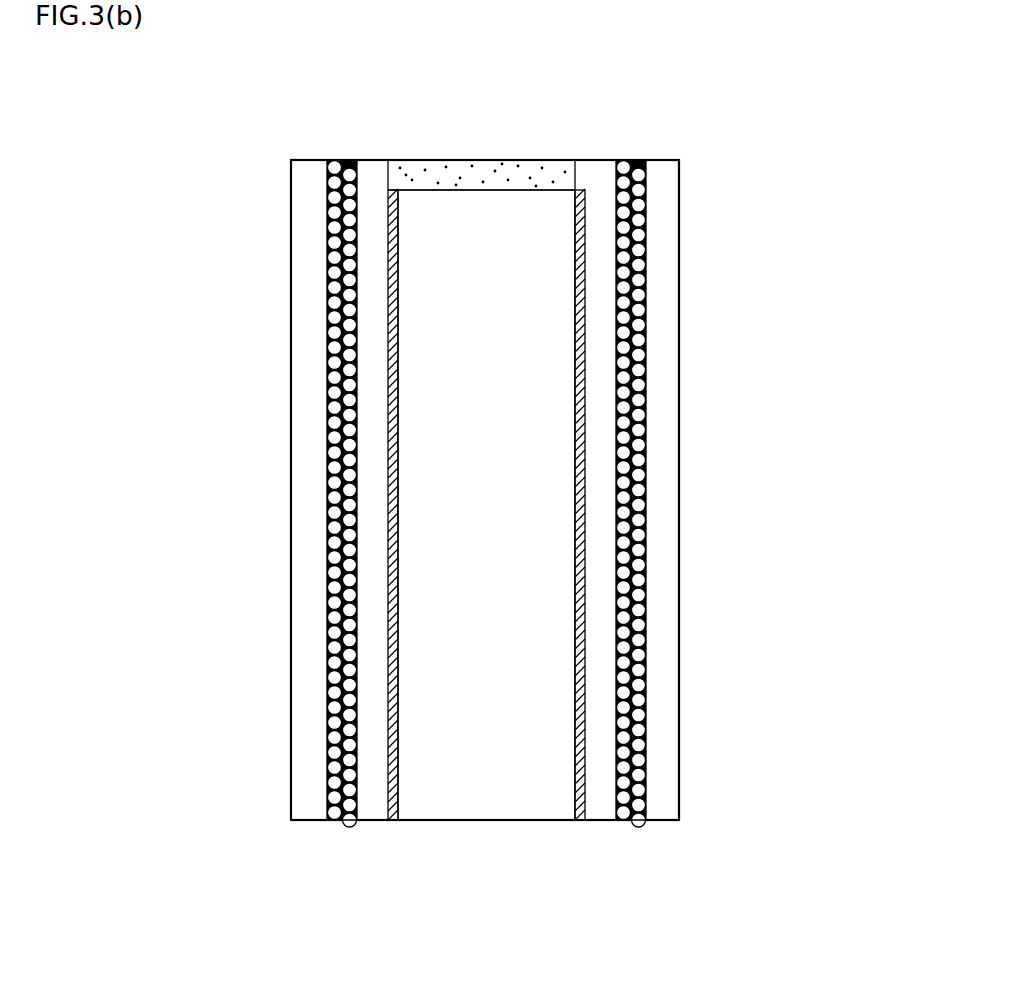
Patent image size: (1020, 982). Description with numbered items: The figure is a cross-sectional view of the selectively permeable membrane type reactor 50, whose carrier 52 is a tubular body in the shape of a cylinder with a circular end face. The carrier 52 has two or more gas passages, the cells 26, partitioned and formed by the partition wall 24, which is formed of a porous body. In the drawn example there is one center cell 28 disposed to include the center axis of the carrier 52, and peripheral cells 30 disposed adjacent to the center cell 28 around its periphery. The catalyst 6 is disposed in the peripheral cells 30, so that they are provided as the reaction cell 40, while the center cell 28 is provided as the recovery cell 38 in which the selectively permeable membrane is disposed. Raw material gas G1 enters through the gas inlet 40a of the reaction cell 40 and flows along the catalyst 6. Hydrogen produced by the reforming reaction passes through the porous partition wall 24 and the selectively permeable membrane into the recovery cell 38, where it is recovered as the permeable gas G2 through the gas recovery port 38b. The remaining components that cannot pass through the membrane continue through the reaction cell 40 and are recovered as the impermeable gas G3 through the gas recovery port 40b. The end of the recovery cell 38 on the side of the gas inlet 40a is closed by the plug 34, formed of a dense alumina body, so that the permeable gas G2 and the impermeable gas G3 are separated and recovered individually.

The catalyst 6 is at (338, 652).
The partition wall 24 is at (373, 158).
The cells 26 is at (477, 427).
The center cell 28 is at (485, 423).
The peripheral cells 30 is at (477, 493).
The plug 34 is at (500, 158).
The recovery cell 38 is at (430, 222).
The gas recovery port 38b is at (456, 822).
The reaction cell 40 is at (477, 493).
The gas inlet 40a is at (326, 158).
The gas recovery port 40b is at (333, 822).
The selectively permeable membrane type reactor 50 is at (589, 490).
The carrier 52 is at (667, 500).
The inlet gas flow G1 is at (338, 157).
The permeable gas G2 is at (345, 346).
The impermeable gas G3 is at (345, 822).